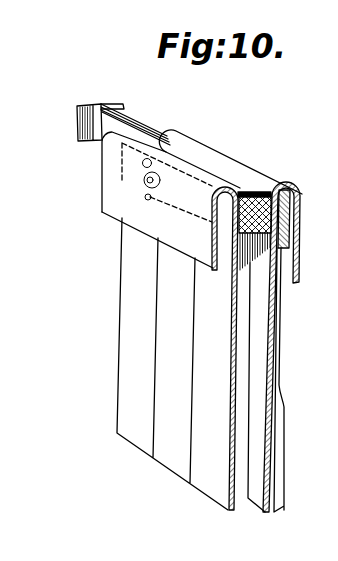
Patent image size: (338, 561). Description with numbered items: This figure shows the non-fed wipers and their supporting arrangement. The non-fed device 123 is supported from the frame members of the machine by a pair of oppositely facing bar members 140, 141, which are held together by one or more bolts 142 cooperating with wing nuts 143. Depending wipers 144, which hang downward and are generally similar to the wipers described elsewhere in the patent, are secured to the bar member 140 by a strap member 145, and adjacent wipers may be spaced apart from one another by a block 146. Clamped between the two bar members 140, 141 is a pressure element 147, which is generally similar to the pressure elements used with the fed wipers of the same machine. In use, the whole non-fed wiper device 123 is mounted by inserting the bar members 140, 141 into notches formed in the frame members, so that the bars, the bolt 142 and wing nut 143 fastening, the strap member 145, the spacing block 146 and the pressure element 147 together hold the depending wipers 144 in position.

The non-fed device 123 is at (119, 307).
The bar member 140 is at (84, 122).
The bar member 141 is at (128, 112).
The bolt 142 is at (143, 180).
The wing nut 143 is at (145, 197).
The depending wiper 144 is at (247, 338).
The strap member 145 is at (226, 217).
The block 146 is at (245, 188).
The pressure element 147 is at (283, 414).